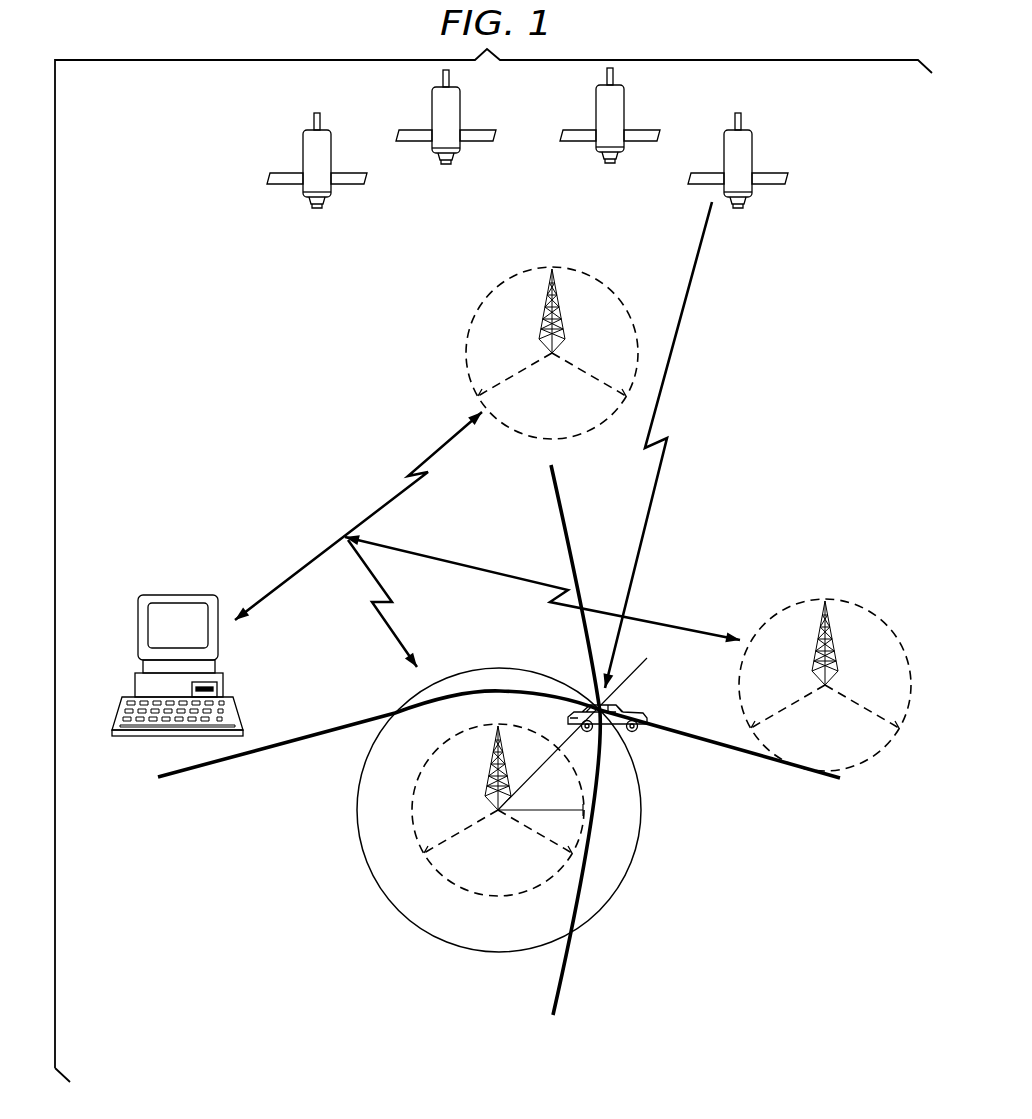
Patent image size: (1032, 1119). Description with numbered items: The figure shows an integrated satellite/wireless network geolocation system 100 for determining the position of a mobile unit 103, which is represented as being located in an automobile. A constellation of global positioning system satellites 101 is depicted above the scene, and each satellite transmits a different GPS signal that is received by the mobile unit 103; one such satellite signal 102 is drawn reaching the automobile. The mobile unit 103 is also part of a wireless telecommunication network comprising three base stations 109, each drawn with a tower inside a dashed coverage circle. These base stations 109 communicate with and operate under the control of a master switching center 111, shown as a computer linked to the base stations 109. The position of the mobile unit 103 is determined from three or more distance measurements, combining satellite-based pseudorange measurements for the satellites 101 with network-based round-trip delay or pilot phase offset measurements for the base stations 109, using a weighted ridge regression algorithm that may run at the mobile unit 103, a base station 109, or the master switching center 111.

The integrated satellite/wireless network geolocation system 100 is at (628, 956).
The global positioning system (GPS) satellites 101 is at (624, 106).
The satellite signal 102 is at (692, 280).
The mobile unit 103 is at (648, 718).
The base stations 109 is at (466, 353).
The master switching center (MSC) 111 is at (138, 618).